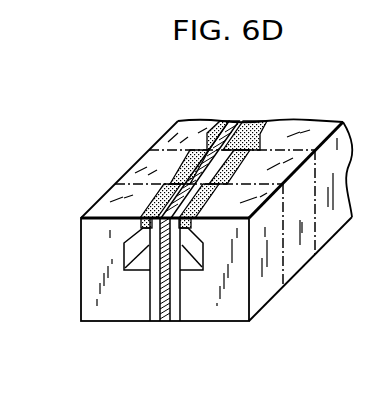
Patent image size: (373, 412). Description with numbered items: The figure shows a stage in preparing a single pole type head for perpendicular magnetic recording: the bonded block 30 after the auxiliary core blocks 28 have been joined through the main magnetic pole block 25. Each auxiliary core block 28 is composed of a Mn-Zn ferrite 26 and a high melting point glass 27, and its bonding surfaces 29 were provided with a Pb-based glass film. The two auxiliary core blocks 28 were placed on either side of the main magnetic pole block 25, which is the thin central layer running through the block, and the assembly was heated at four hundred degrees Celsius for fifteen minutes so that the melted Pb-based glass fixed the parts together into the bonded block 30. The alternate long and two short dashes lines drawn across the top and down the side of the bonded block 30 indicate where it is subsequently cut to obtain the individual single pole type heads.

The main magnetic pole block 25 is at (156, 312).
The Mn-Zn ferrite 26 is at (114, 307).
The high melting point glass 27 is at (172, 177).
The auxiliary core blocks 28 is at (105, 207).
The bonding surfaces 29 is at (223, 121).
The bonded block 30 is at (201, 331).